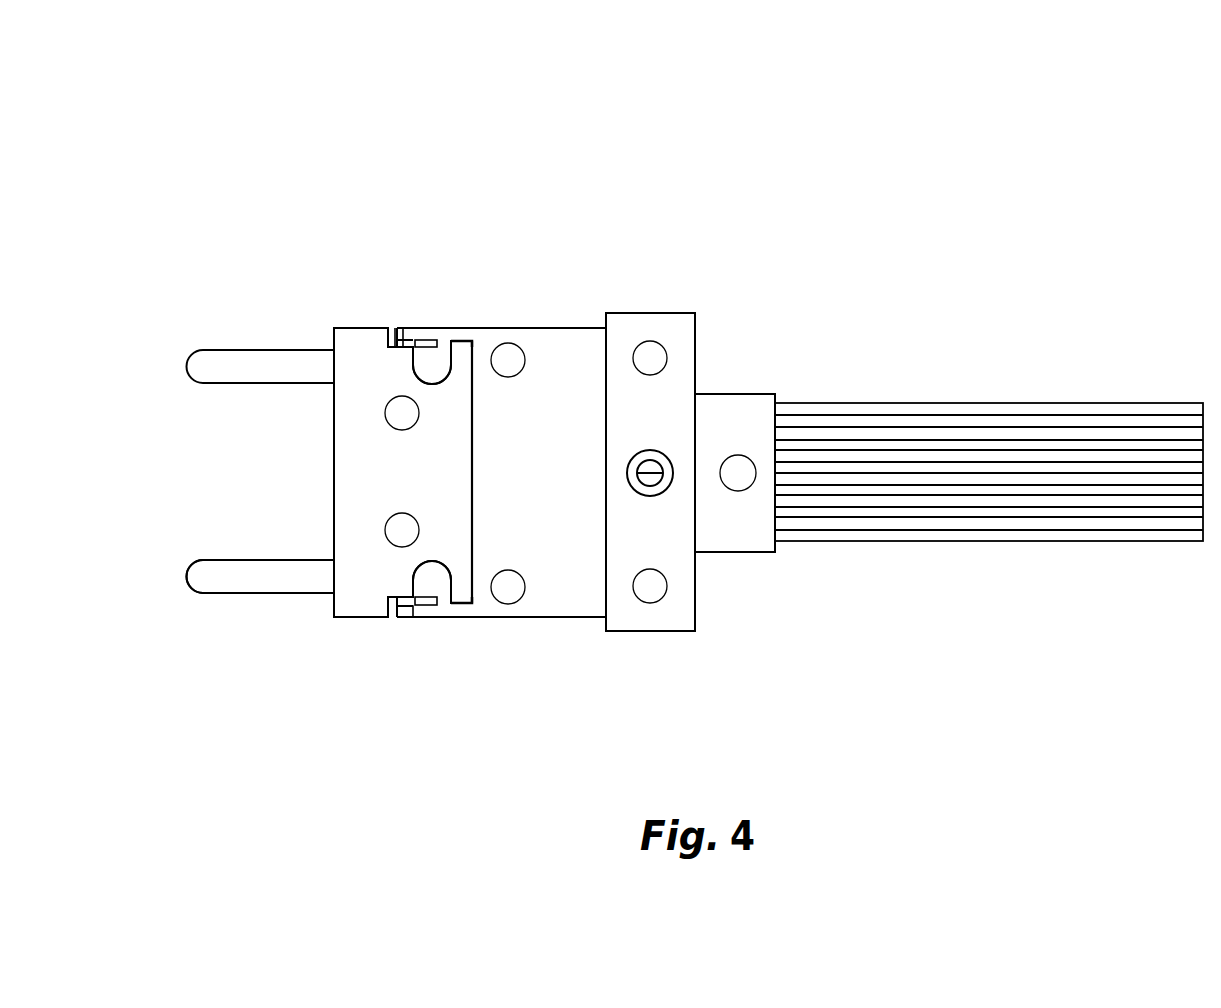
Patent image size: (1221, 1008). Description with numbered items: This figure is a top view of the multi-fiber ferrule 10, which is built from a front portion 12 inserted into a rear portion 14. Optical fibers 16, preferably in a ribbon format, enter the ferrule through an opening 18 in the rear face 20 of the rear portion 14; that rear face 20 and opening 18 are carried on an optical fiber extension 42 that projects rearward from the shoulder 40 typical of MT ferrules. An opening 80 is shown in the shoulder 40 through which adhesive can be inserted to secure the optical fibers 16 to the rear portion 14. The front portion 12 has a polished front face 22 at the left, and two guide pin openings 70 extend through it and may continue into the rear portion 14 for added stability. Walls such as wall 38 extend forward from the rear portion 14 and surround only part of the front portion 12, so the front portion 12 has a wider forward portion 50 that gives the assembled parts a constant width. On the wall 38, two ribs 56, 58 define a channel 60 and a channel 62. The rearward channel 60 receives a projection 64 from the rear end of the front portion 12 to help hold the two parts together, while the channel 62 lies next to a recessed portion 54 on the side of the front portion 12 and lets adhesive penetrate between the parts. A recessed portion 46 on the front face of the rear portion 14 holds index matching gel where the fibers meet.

The multi-fiber ferrule 10 is at (705, 175).
The front portion 12 is at (333, 463).
The rear portion 14 is at (568, 327).
The optical fibers 16 is at (1053, 402).
The opening 18 is at (778, 398).
The rear face 20 is at (778, 547).
The front face 22 is at (320, 605).
The wall 38 is at (432, 620).
The shoulder 40 is at (655, 312).
The optical fiber extension 42 is at (752, 393).
The recessed portion 46 is at (476, 473).
The forward portion 50 is at (373, 620).
The recessed portion 54 is at (435, 575).
The rib 56 is at (398, 340).
The rib 58 is at (440, 342).
The channel 60 is at (461, 342).
The channel 62 is at (424, 340).
The projection 64 is at (462, 600).
The guide pin openings 70 is at (207, 559).
The opening 80 is at (659, 464).